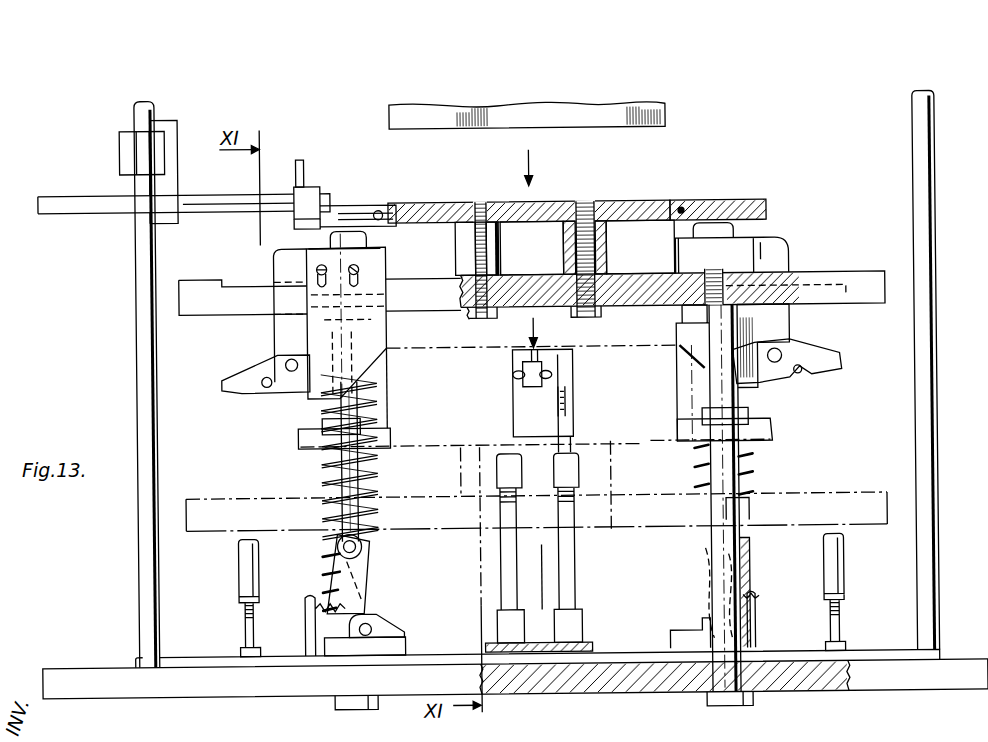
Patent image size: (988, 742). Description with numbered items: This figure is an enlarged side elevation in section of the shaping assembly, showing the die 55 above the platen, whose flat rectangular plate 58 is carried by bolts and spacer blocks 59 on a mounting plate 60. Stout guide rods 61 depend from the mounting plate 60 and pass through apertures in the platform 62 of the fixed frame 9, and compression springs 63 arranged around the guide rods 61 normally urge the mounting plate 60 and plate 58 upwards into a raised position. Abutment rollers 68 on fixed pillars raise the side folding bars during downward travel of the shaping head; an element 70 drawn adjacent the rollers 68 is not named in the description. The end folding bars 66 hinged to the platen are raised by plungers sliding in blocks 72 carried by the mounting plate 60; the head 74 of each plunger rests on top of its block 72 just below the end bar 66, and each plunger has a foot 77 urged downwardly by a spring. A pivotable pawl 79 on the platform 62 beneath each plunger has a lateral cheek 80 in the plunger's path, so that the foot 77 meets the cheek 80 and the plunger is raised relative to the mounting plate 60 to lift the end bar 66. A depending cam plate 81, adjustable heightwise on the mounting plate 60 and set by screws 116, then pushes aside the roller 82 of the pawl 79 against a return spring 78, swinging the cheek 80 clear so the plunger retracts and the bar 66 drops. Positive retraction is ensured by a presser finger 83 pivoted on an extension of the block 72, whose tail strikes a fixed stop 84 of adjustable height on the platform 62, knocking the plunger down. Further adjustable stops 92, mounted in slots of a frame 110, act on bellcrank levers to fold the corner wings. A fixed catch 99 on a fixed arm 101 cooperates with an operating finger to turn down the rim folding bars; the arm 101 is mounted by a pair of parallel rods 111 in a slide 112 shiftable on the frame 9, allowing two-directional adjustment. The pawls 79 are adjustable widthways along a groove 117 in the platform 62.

The fixed frame 9 is at (140, 420).
The die 55 is at (492, 127).
The flat rectangular plate 58 is at (645, 211).
The bolts and spacer blocks 59 is at (492, 250).
The mounting plate 60 is at (650, 302).
The guide rods 61 is at (360, 483).
The platform 62 is at (889, 678).
The compression springs 63 is at (324, 485).
The end folding bars 66 is at (723, 206).
The abutment rollers 68 is at (538, 376).
The pin 70 is at (535, 414).
The blocks 72 is at (745, 249).
The plunger head 74 is at (330, 238).
The plunger foot 77 is at (360, 421).
The return spring 78 is at (757, 600).
The pivotable pawl 79 is at (356, 600).
The lateral cheek 80 is at (360, 600).
The cam plate 81 is at (378, 341).
The roller 82 is at (362, 547).
The presser finger 83 is at (233, 376).
The fixed stop 84 is at (246, 553).
The stops 92 is at (562, 464).
The fixed catch 99 is at (306, 192).
The fixed arm 101 is at (323, 203).
The frame 110 is at (591, 648).
The parallel rods 111 is at (236, 200).
The slide 112 is at (172, 182).
The screws 116 is at (362, 272).
The groove 117 is at (258, 289).